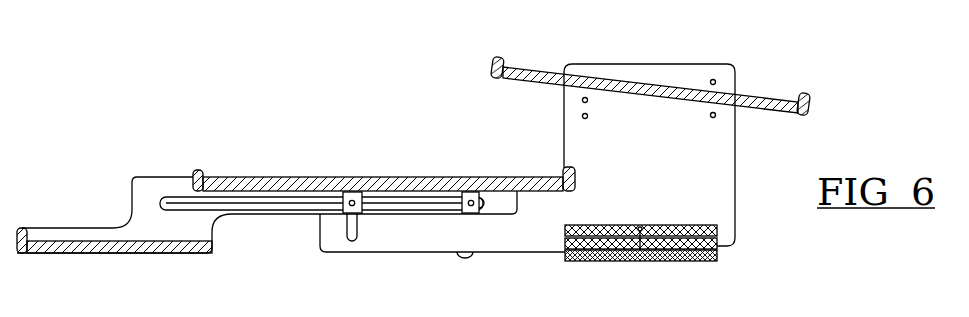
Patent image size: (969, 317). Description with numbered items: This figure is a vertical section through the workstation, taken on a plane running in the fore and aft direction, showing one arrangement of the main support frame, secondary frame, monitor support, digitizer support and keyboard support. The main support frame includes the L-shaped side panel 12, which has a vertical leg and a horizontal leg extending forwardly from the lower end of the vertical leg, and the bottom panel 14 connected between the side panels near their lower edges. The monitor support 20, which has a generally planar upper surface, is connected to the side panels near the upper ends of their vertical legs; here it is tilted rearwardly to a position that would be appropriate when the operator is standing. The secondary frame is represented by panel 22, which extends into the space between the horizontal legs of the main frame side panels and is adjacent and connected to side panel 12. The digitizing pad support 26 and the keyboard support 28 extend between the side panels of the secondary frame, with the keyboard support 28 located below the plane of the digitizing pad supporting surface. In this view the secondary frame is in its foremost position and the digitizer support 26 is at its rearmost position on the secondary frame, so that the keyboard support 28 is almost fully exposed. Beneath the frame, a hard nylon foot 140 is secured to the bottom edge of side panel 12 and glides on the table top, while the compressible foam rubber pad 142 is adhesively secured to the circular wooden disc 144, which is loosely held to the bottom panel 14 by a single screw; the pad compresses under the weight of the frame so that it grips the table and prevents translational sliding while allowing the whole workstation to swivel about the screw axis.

The side panel 12 is at (349, 255).
The bottom panel 14 is at (590, 227).
The monitor support 20 is at (535, 66).
The secondary frame panel 22 is at (155, 177).
The digitizing pad support 26 is at (270, 179).
The keyboard support 28 is at (172, 253).
The foot 140 is at (467, 257).
The compressible foam rubber pad 142 is at (640, 258).
The wooden disc 144 is at (717, 240).